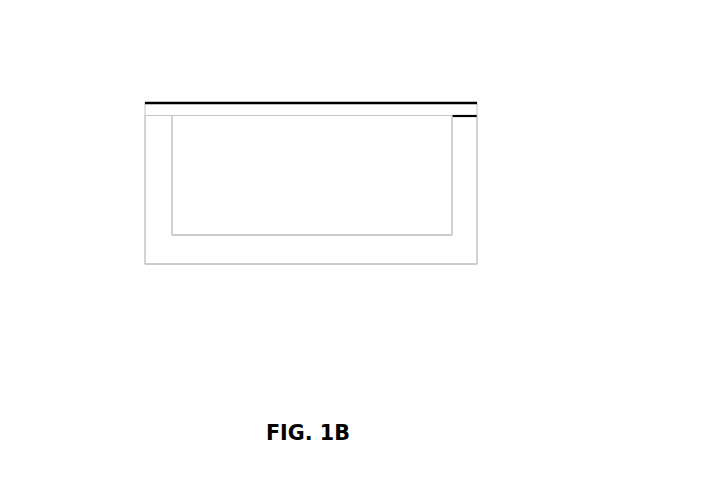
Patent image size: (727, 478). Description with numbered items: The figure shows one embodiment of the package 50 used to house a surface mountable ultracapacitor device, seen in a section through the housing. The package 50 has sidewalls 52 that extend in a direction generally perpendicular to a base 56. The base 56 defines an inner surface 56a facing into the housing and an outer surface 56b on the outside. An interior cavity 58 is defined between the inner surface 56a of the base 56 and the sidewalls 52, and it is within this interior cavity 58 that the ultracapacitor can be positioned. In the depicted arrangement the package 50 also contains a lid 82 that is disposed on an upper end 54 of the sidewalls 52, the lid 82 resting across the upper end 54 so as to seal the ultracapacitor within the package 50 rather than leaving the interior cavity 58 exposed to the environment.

The package 50 is at (203, 87).
The sidewalls 52 is at (155, 179).
The upper end 54 is at (454, 115).
The base 56 is at (241, 235).
The inner surface 56a is at (309, 235).
The outer surface 56b is at (240, 265).
The interior cavity 58 is at (303, 167).
The lid 82 is at (371, 110).